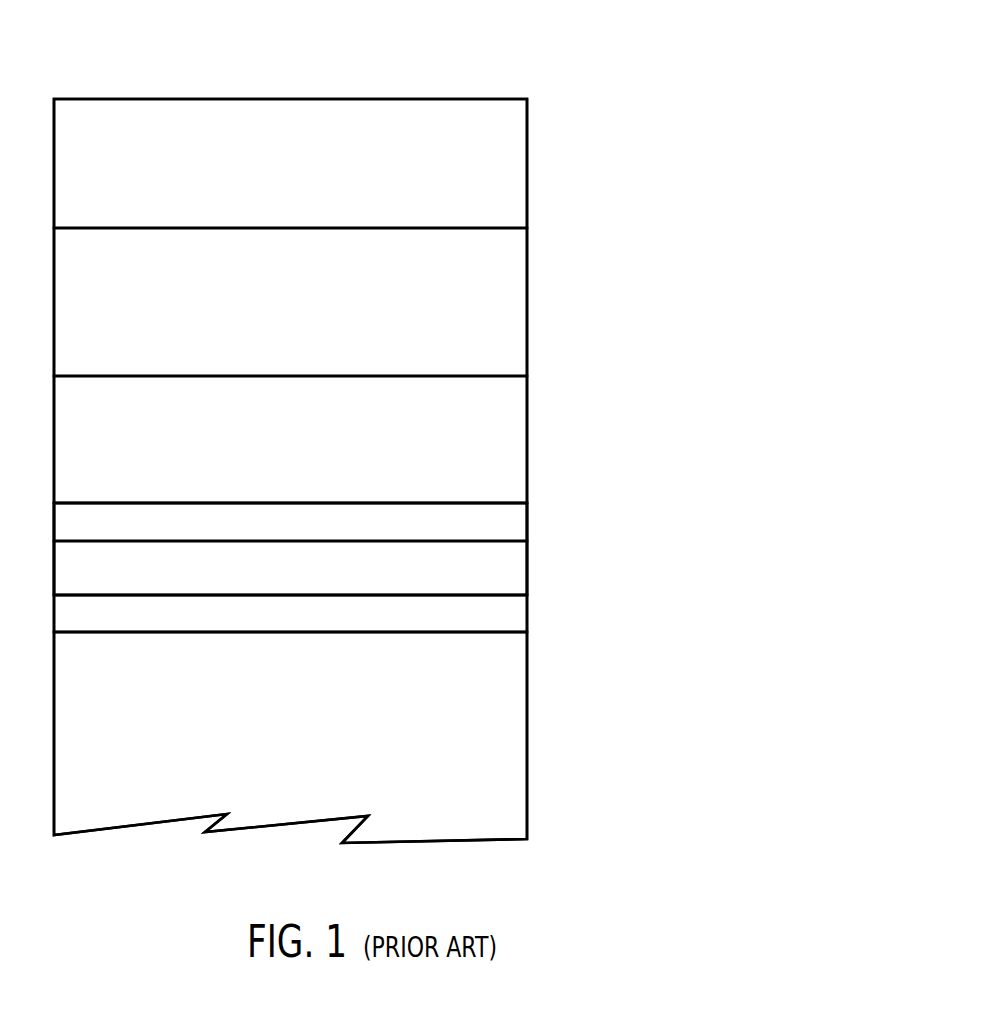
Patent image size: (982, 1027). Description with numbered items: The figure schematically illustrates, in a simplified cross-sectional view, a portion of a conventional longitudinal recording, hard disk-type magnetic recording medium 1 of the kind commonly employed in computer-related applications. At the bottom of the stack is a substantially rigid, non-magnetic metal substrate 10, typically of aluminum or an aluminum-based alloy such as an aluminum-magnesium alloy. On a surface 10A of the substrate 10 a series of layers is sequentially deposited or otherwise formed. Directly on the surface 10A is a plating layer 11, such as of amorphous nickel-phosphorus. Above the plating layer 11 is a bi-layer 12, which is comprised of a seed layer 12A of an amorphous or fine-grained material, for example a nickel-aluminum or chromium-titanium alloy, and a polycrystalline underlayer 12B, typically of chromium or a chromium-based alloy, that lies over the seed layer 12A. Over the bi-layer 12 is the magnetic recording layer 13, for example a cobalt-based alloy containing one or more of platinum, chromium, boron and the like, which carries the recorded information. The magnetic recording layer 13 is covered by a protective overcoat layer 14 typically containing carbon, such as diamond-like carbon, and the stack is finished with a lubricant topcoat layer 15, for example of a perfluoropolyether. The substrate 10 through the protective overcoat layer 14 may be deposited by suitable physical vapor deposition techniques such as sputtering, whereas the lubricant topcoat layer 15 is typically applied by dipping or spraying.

The magnetic recording medium 1 is at (422, 79).
The lubricant topcoat layer 15 is at (533, 165).
The protective overcoat layer 14 is at (533, 299).
The magnetic recording layer 13 is at (533, 435).
The bi-layer 12 is at (775, 513).
The polycrystalline underlayer 12B is at (533, 520).
The seed layer 12A is at (533, 568).
The plating layer 11 is at (533, 615).
The surface 10A is at (490, 633).
The non-magnetic metal substrate 10 is at (533, 763).